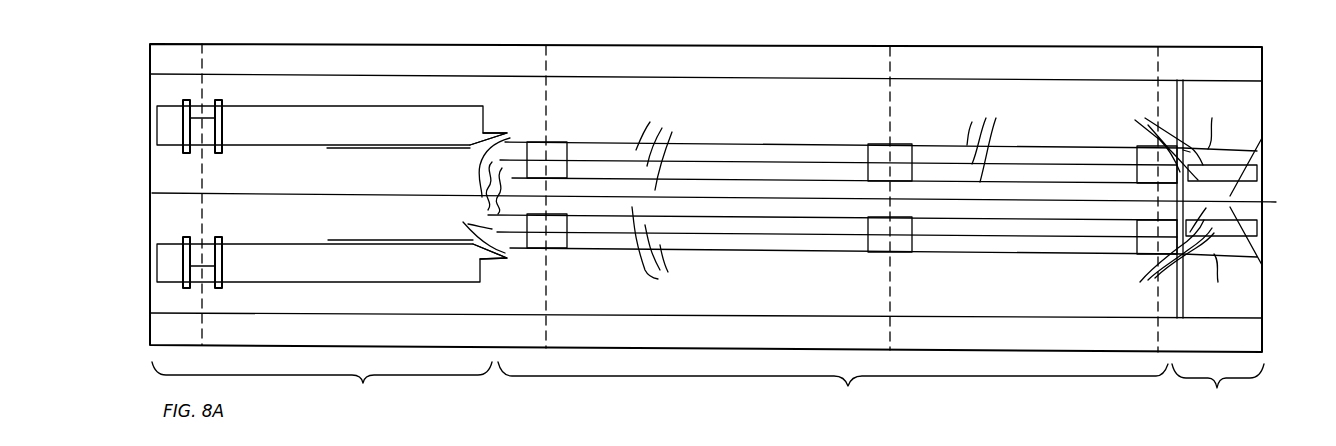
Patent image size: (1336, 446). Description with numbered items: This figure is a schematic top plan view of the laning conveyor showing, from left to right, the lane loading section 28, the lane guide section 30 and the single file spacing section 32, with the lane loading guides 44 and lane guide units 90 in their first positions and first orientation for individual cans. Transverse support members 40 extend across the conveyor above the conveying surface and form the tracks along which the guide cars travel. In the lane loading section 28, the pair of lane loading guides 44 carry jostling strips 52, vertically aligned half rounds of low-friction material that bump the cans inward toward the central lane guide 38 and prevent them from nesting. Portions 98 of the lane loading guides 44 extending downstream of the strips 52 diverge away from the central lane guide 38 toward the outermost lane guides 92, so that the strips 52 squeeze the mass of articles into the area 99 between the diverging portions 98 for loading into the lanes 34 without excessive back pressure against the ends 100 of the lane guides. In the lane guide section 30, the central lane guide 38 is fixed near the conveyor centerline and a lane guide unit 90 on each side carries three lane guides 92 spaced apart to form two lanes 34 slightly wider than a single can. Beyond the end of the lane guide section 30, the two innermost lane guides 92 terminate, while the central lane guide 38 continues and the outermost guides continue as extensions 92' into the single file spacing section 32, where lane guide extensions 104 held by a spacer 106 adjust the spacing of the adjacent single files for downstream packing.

The lane loading section 28 is at (363, 383).
The lane guide section 30 is at (848, 386).
The single file spacing section 32 is at (1217, 388).
The lanes 34 is at (851, 201).
The central lane guide 38 is at (758, 195).
The support members 40 is at (1182, 104).
The lane loading guides 44 is at (360, 98).
The jostling strips 52 is at (386, 150).
The lane guide units 90 is at (566, 134).
The lane guides 92 is at (981, 139).
The extensions of the outermost lane guides 92' is at (1212, 199).
The portions of lane loading guides 98 is at (493, 140).
The area between diverging guides 99 is at (470, 158).
The ends of the lane guides 100 is at (424, 196).
The lane guide extensions 104 is at (1255, 148).
The spacer 106 is at (1256, 174).